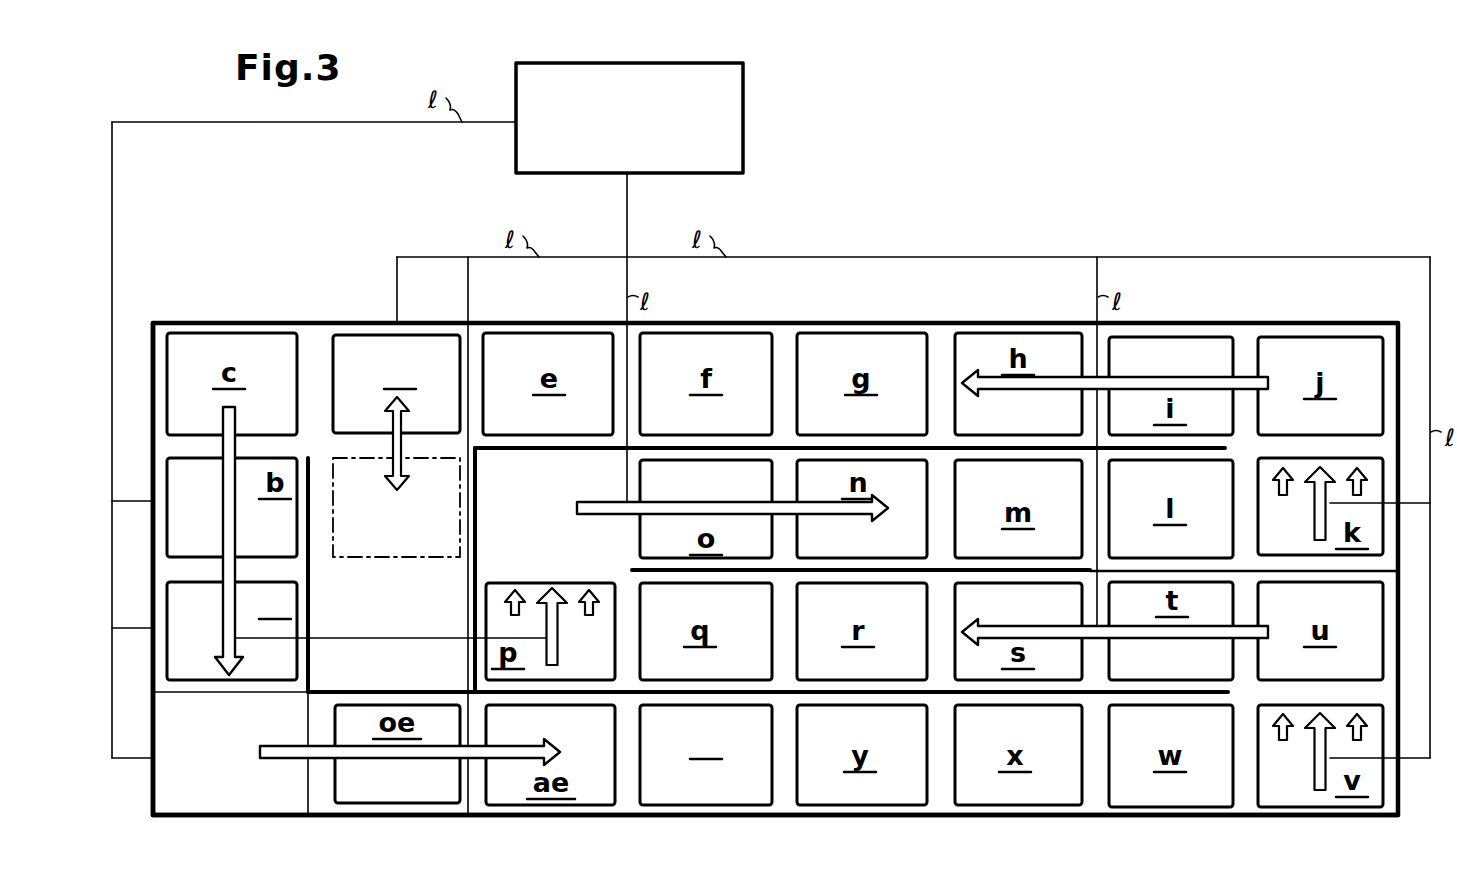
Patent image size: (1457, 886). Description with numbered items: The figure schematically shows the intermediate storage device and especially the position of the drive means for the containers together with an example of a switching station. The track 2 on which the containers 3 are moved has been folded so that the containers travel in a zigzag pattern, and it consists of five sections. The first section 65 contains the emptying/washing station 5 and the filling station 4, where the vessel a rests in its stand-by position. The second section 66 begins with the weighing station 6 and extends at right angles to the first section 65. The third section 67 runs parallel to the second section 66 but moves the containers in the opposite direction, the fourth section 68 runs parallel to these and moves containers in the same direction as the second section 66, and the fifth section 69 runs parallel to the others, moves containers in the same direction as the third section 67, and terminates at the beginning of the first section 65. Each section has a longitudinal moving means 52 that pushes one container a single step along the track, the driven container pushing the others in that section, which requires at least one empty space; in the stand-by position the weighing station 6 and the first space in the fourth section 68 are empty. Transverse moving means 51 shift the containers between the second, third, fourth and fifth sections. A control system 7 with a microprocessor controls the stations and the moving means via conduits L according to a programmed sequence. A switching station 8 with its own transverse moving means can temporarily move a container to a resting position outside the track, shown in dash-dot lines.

The track 2 is at (560, 818).
The container 3 is at (725, 775).
The filling station 4 is at (160, 603).
The emptying/washing station 5 is at (157, 520).
The weighing station 6 is at (205, 763).
The control system 7 is at (720, 125).
The switching station 8 is at (417, 360).
The transverse moving means 51 is at (554, 640).
The longitudinal moving means 52 is at (228, 480).
The first section 65 is at (185, 567).
The second section 66 is at (628, 786).
The third section 67 is at (940, 672).
The fourth section 68 is at (944, 464).
The fifth section 69 is at (785, 360).